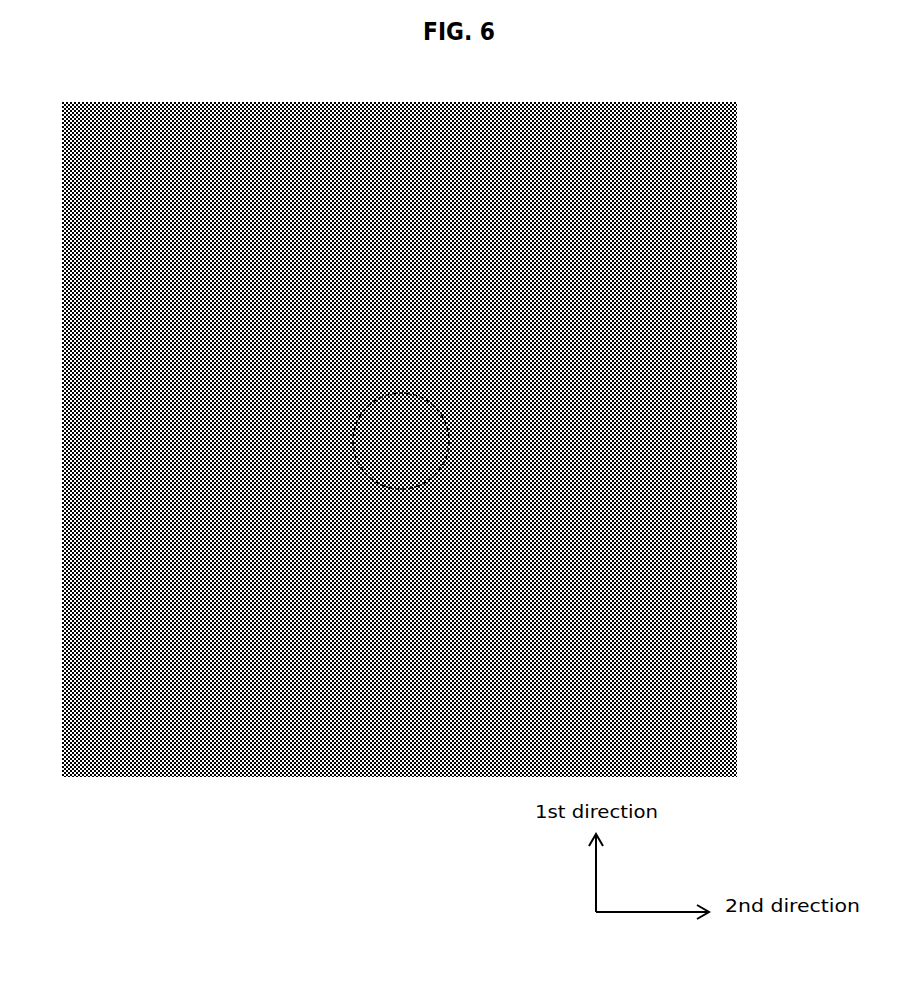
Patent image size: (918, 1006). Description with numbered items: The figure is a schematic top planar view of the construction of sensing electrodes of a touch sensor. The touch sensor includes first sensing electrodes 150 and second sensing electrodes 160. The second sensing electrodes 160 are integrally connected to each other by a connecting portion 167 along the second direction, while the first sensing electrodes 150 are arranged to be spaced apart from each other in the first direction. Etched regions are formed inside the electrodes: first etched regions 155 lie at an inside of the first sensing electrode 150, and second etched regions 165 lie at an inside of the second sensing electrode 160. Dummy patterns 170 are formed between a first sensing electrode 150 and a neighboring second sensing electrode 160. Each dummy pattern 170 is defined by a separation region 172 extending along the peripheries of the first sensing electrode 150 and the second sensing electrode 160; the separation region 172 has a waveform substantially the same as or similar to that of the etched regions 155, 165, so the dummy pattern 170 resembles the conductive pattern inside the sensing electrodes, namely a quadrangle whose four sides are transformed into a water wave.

The first sensing electrode 150 is at (407, 743).
The first etched region 155 is at (285, 717).
The second sensing electrode 160 is at (717, 487).
The second etched region 165 is at (667, 528).
The connecting portion 167 is at (447, 430).
The dummy pattern 170 is at (622, 205).
The separation region 172 is at (622, 238).